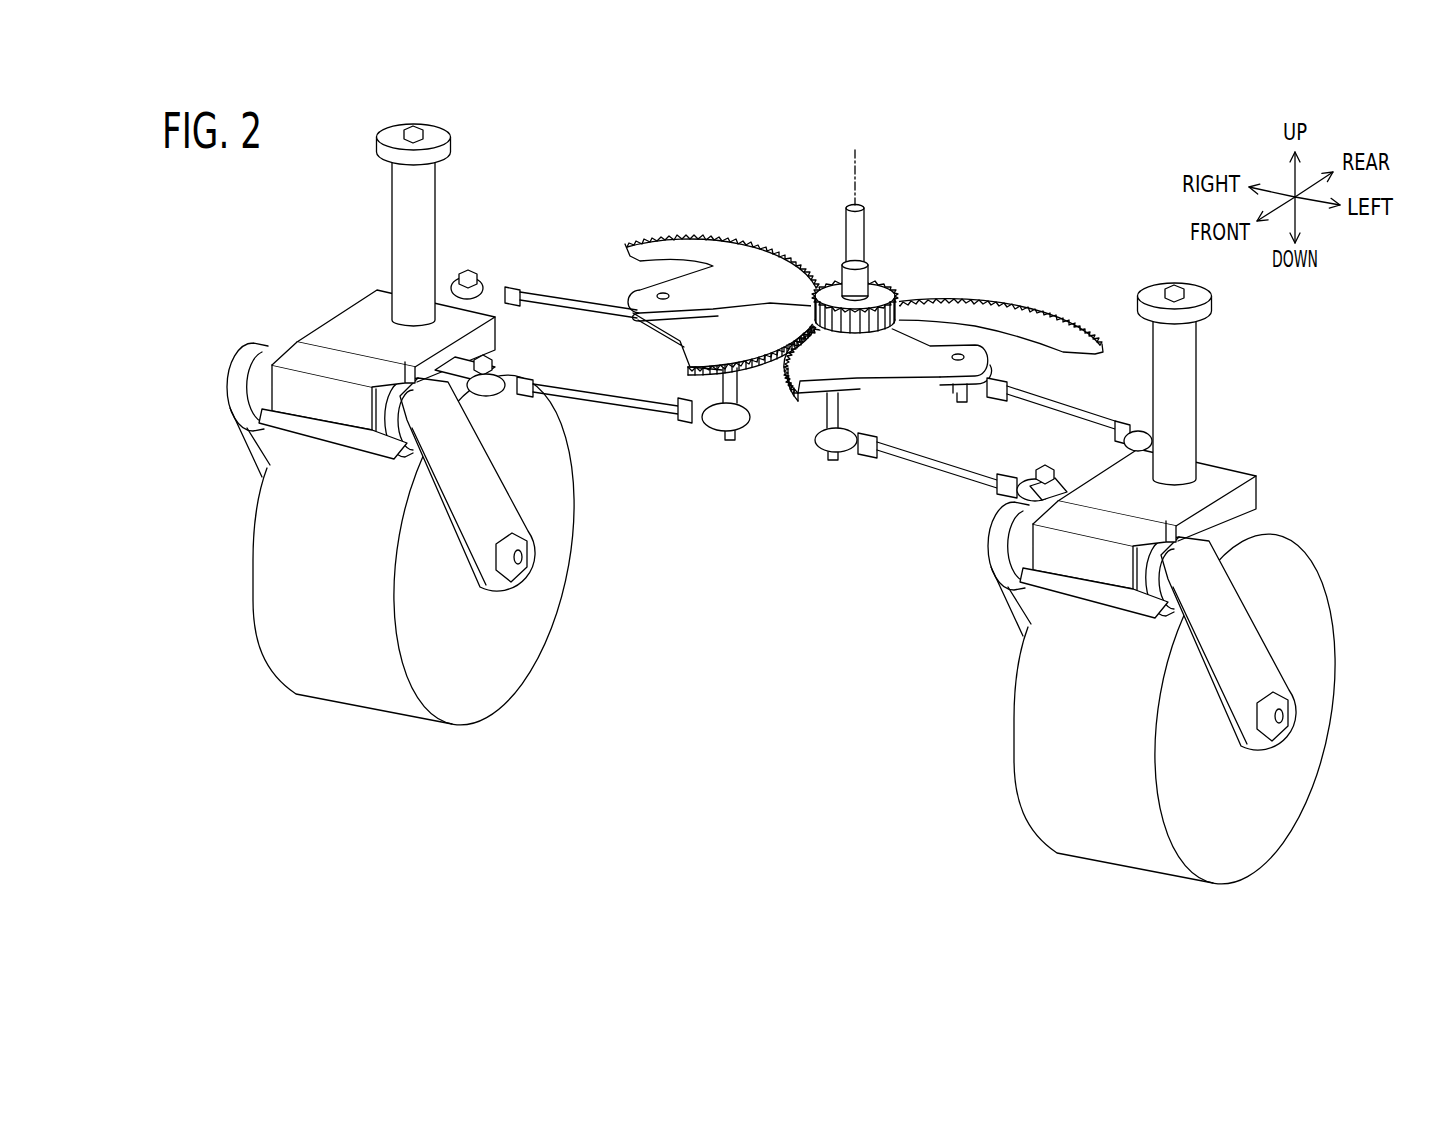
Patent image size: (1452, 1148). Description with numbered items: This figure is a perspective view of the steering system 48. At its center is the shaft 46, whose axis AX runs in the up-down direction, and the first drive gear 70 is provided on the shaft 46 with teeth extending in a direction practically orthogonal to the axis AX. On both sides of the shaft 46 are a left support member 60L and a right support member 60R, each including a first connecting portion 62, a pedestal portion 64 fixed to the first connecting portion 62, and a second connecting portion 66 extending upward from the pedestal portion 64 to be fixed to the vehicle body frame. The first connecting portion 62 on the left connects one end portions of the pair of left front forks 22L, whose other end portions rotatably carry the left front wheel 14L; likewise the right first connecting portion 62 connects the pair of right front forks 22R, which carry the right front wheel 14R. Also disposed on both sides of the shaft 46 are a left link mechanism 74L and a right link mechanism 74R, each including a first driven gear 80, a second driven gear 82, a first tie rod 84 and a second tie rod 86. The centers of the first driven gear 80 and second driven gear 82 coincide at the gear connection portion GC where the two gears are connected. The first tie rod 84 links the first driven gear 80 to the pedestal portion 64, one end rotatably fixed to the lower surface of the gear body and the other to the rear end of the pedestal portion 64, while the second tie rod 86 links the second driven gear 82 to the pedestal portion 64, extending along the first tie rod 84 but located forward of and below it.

The steering system 48 is at (1032, 143).
The right support member 60R is at (270, 267).
The left support member 60L is at (1280, 394).
The right front wheel 14R is at (267, 604).
The left front wheel 14L is at (1316, 716).
The right front forks 22R is at (242, 446).
The left front forks 22L is at (1008, 610).
The first connecting portion 62 is at (262, 396).
The pedestal portion 64 is at (325, 330).
The second connecting portion 66 is at (400, 232).
The right link mechanism 74R is at (623, 226).
The left link mechanism 74L is at (1063, 278).
The first driven gear 80 is at (660, 236).
The second driven gear 82 is at (670, 338).
The first tie rod 84 is at (548, 303).
The second tie rod 86 is at (626, 404).
The gear connection portion GC is at (672, 292).
The first drive gear 70 is at (880, 290).
The shaft 46 is at (867, 208).
The axis AX is at (856, 164).